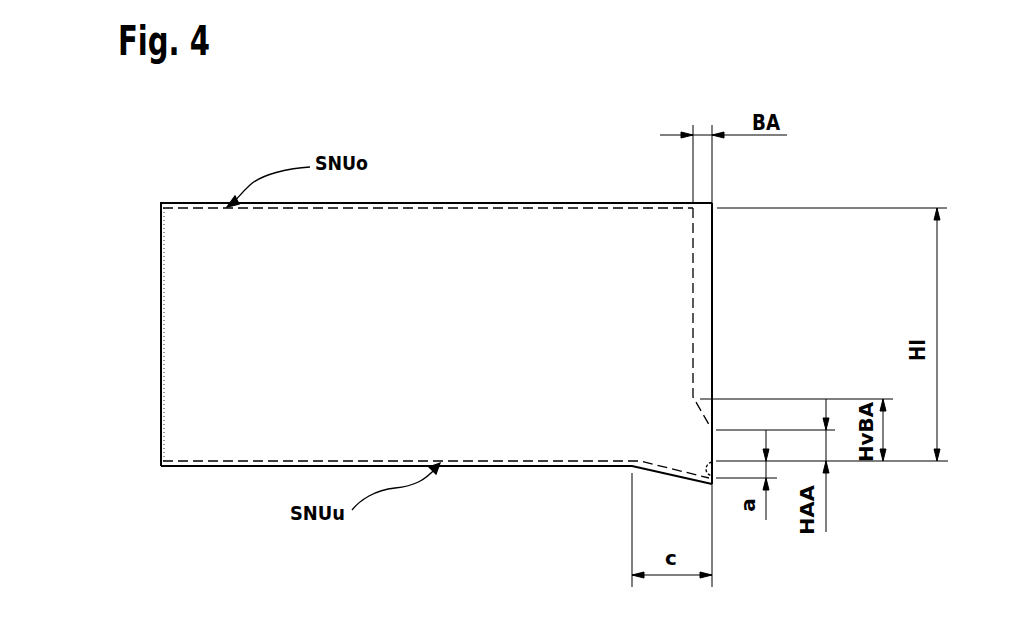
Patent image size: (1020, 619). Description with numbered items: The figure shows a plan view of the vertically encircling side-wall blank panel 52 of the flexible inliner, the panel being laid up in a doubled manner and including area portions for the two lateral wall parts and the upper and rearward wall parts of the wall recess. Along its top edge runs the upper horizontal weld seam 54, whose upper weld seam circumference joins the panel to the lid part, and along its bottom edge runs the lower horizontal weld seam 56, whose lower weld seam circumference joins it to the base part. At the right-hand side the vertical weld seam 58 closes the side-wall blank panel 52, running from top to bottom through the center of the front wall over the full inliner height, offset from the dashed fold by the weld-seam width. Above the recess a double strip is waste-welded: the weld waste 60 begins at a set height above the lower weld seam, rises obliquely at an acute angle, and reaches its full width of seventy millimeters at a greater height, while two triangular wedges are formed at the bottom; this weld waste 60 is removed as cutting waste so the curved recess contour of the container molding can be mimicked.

The side-wall blank panel 52 is at (193, 294).
The upper horizontal weld seam 54 is at (193, 203).
The lower horizontal weld seam 56 is at (552, 466).
The vertical weld seam 58 is at (693, 267).
The weld waste 60 is at (702, 346).